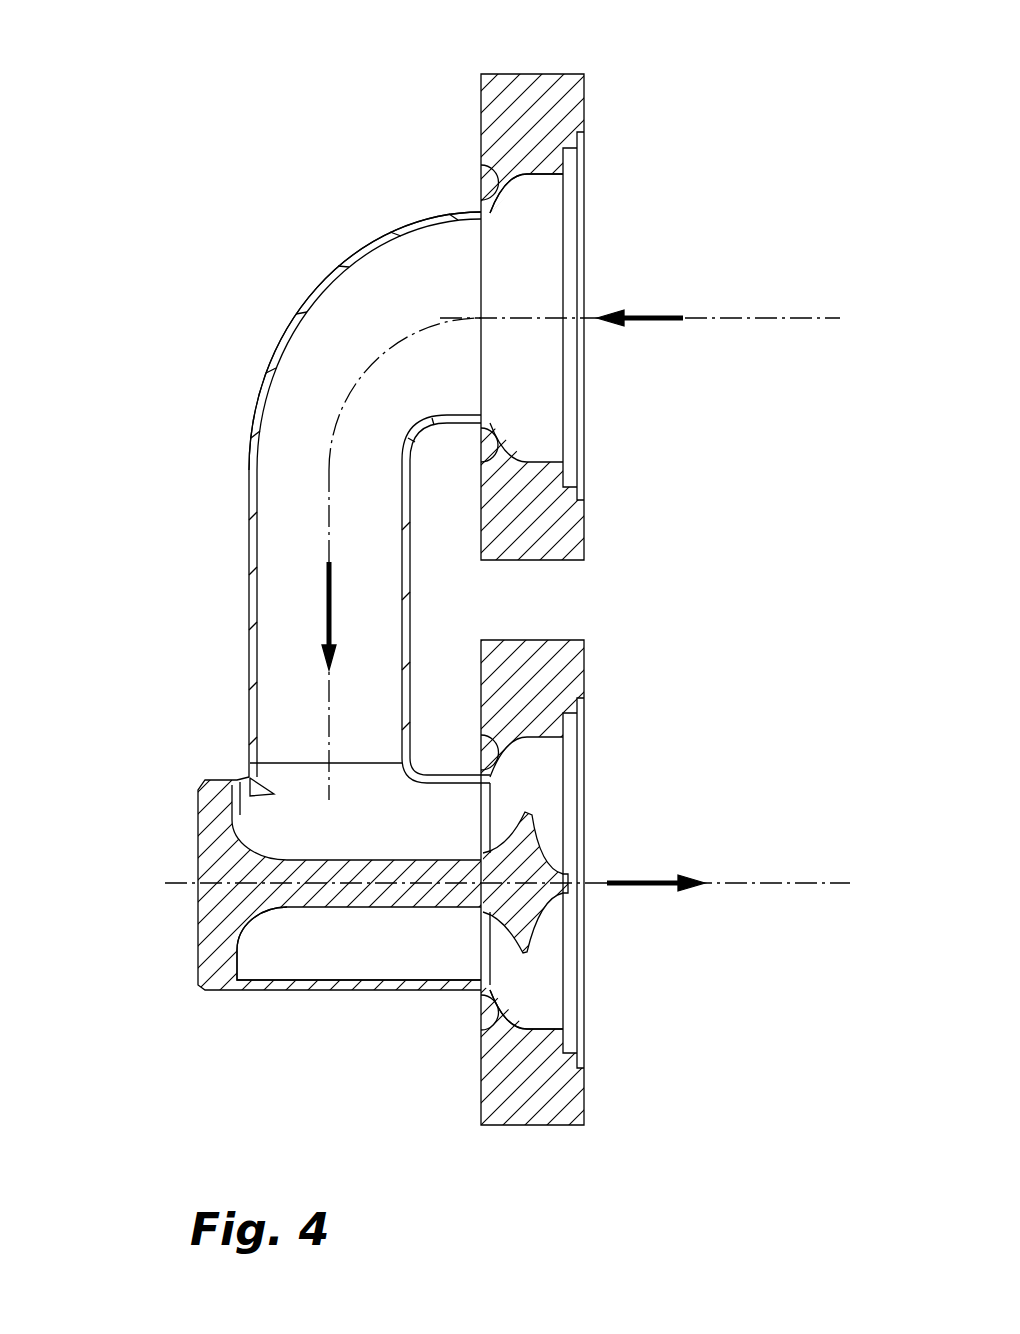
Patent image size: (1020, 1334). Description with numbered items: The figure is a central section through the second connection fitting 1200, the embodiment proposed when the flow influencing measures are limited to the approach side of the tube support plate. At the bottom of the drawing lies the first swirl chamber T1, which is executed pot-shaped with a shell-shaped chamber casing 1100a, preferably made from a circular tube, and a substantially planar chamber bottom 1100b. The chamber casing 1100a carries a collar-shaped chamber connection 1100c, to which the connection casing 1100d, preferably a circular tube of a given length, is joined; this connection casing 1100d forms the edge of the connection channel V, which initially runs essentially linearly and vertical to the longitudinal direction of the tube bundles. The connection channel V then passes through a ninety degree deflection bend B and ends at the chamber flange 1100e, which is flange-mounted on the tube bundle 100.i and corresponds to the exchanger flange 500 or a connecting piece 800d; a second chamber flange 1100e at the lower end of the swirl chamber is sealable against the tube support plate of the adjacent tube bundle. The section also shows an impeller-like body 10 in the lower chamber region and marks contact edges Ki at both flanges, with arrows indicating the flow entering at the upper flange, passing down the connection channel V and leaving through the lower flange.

The second connection fitting 1200 is at (273, 497).
The chamber casing 1100a is at (350, 987).
The chamber bottom 1100b is at (274, 916).
The chamber connection 1100c is at (274, 916).
The connection casing 1100d is at (253, 665).
The chamber flange 1100e is at (633, 600).
The exchanger flange 500 is at (633, 600).
The flange element 800d is at (633, 600).
The impeller 10 is at (545, 836).
The deflection bend B is at (305, 287).
The connection channel V is at (325, 603).
The first swirl chamber T1 is at (359, 943).
The contact edge Ki is at (532, 170).
The tube bundle 100.i is at (760, 318).